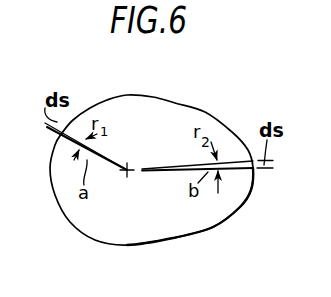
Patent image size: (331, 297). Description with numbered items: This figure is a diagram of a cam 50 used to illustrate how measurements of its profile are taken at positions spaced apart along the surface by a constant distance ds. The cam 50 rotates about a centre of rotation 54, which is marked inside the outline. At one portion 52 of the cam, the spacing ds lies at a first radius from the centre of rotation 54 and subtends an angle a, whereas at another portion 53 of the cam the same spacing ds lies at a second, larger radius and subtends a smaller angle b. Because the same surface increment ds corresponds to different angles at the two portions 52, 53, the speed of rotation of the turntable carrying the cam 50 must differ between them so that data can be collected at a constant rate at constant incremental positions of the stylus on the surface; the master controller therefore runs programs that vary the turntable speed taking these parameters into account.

The cam 50 is at (166, 92).
The portion of the cam 52 is at (52, 140).
The portion of the cam 53 is at (258, 174).
The centre of rotation 54 is at (129, 165).